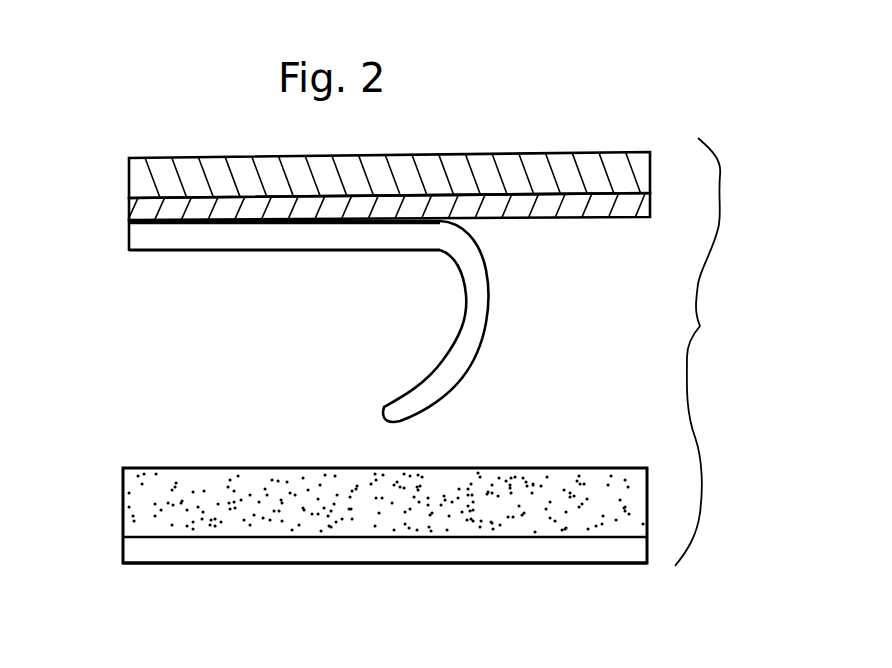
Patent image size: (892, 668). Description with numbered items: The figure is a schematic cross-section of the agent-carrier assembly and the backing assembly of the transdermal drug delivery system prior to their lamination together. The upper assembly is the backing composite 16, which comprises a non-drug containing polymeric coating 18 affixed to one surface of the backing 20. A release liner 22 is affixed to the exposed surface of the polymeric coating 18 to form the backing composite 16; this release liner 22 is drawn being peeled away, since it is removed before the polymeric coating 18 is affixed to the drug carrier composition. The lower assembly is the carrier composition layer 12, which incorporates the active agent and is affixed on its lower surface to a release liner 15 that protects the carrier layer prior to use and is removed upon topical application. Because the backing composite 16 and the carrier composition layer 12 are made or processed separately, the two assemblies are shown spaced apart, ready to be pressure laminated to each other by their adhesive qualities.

The carrier composition layer 12 is at (339, 548).
The release liner 15 is at (189, 566).
The backing composite 16 is at (365, 258).
The polymeric coating 18 is at (652, 201).
The backing 20 is at (607, 152).
The release liner 22 is at (192, 253).